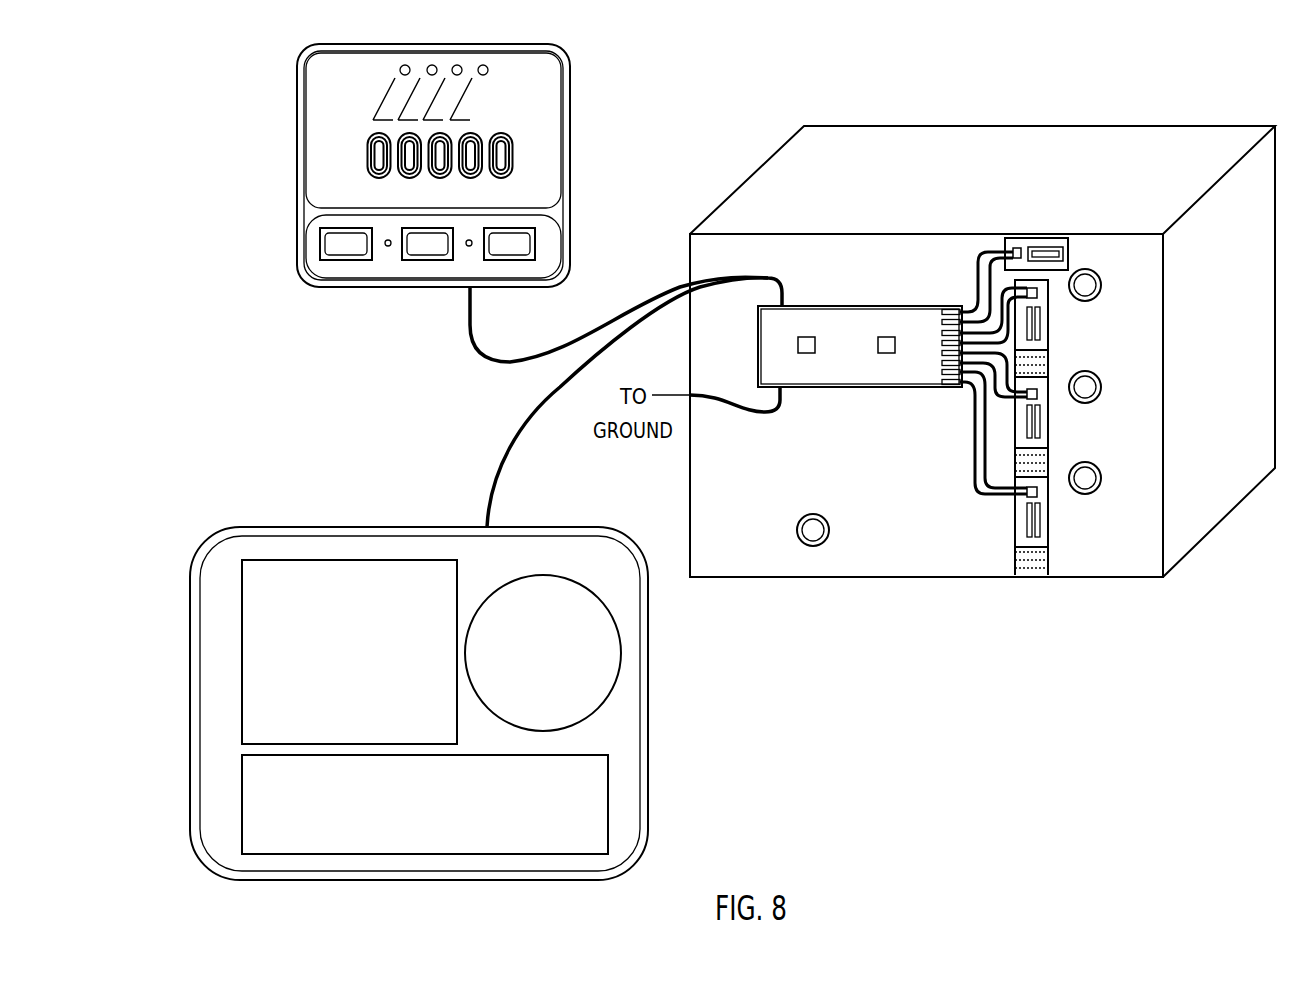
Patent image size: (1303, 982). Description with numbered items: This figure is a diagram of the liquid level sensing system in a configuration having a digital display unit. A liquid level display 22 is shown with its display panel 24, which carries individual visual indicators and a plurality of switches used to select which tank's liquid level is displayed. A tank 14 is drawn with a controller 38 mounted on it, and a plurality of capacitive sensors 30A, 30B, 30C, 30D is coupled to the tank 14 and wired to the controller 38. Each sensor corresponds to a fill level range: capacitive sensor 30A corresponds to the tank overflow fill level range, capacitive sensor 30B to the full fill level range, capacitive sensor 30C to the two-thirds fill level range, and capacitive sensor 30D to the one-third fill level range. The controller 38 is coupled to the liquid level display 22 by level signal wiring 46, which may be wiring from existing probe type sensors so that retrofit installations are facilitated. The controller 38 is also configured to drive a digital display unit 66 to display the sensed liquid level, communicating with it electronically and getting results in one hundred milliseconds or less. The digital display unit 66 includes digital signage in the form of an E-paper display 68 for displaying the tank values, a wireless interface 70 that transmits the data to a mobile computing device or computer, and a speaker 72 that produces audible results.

The liquid level display 22 is at (624, 32).
The display panel 24 is at (297, 96).
The level signal wiring 46 is at (500, 367).
The tank 14 is at (1002, 126).
The controller 38 is at (877, 388).
The capacitive sensor 30A is at (1068, 262).
The capacitive sensor 30B is at (1048, 333).
The capacitive sensor 30C is at (1048, 435).
The capacitive sensor 30D is at (1048, 538).
The digital display unit 66 is at (429, 672).
The E-paper display 68 is at (325, 580).
The wireless interface 70 is at (258, 795).
The speaker 72 is at (607, 655).